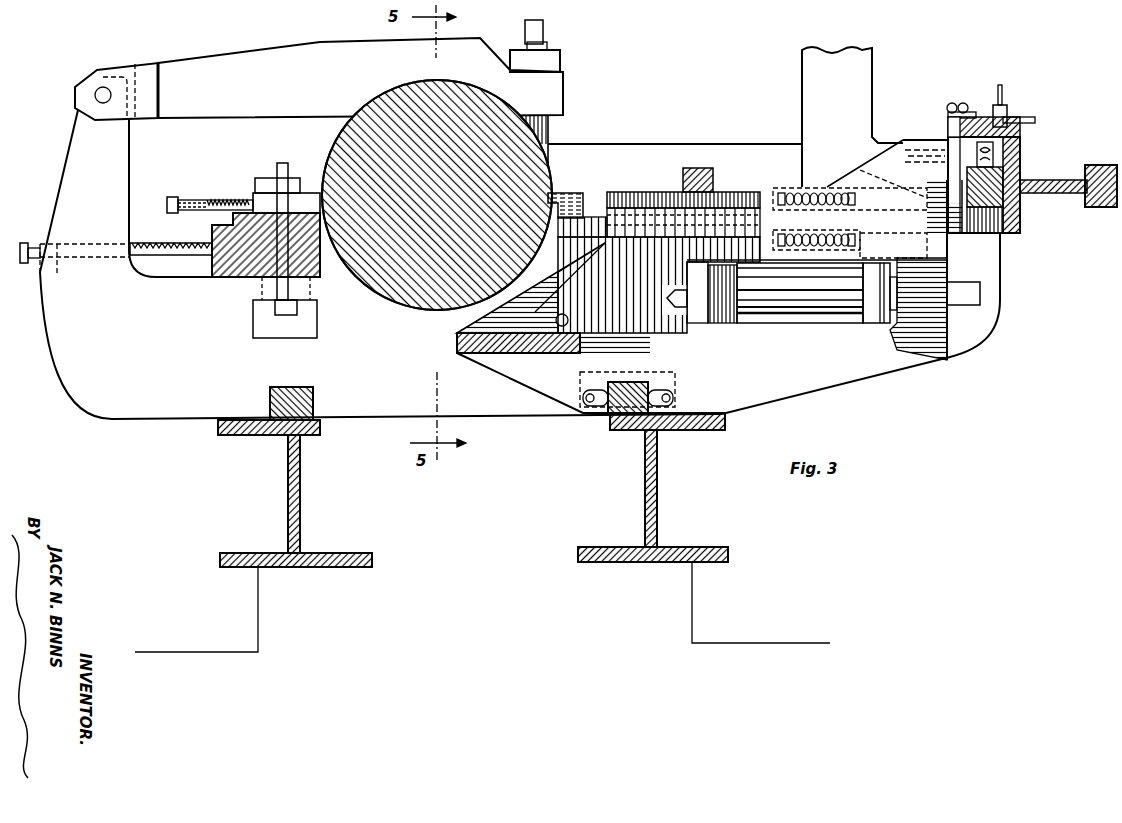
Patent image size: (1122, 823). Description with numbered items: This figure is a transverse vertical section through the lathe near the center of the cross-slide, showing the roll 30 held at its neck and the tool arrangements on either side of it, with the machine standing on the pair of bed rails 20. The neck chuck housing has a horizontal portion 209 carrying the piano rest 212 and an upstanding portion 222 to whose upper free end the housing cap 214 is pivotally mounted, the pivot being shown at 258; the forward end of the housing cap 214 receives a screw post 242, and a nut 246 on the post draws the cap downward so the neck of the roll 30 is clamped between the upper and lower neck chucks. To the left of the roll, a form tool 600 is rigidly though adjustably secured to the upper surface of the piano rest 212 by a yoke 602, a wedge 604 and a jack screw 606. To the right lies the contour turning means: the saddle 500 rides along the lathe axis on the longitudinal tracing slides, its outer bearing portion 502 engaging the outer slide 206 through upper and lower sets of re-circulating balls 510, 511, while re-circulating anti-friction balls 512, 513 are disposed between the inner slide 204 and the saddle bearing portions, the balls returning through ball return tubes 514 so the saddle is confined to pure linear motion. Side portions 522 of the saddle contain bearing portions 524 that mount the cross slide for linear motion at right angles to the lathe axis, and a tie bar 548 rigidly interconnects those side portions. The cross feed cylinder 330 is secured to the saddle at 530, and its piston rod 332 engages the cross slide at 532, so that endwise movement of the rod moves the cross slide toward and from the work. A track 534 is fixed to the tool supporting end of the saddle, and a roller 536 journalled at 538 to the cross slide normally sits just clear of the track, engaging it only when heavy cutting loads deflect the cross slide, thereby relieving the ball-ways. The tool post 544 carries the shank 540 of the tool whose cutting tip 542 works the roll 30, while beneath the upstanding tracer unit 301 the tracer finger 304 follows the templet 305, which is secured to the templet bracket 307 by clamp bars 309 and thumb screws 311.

The bed rails 20 is at (295, 497).
The roll 30 is at (453, 92).
The inner slide 204 is at (673, 317).
The outer slide 206 is at (1020, 180).
The horizontal portion 209 is at (165, 404).
The piano rest 212 is at (225, 262).
The housing cap 214 is at (253, 58).
The upstanding portion 222 is at (66, 156).
The screw post 242 is at (546, 44).
The nut 246 is at (552, 60).
The pivot lug 258 is at (104, 86).
The column 301 is at (805, 83).
The tracer finger 304 is at (1006, 104).
The templet 305 is at (1022, 118).
The templet bracket 307 is at (950, 118).
The clamp bars 309 is at (975, 105).
The thumb screws 311 is at (953, 103).
The cross feed cylinder 330 is at (800, 306).
The piston rod 332 is at (720, 313).
The saddle 500 is at (787, 377).
The outer bearing portion 502 is at (1012, 144).
The re-circulating balls 510 is at (962, 146).
The re-circulating balls 511 is at (1003, 231).
The re-circulating anti-friction balls 512 is at (607, 412).
The re-circulating anti-friction balls 513 is at (657, 406).
The ball return tubes 514 is at (1003, 148).
The side portions of the saddle 522 is at (978, 295).
The bearing portions 524 is at (787, 189).
The cylinder mounting 530 is at (893, 318).
The piston rod connection 532 is at (673, 313).
The track 534 is at (478, 333).
The roller 536 is at (543, 303).
The roller journal 538 is at (532, 383).
The tool shank 540 is at (580, 196).
The cutting tip 542 is at (565, 193).
The tool post 544 is at (608, 193).
The tie bar 548 is at (705, 162).
The form tool 600 is at (310, 192).
The yoke 602 is at (283, 162).
The wedge 604 is at (260, 178).
The jack screw 606 is at (225, 199).